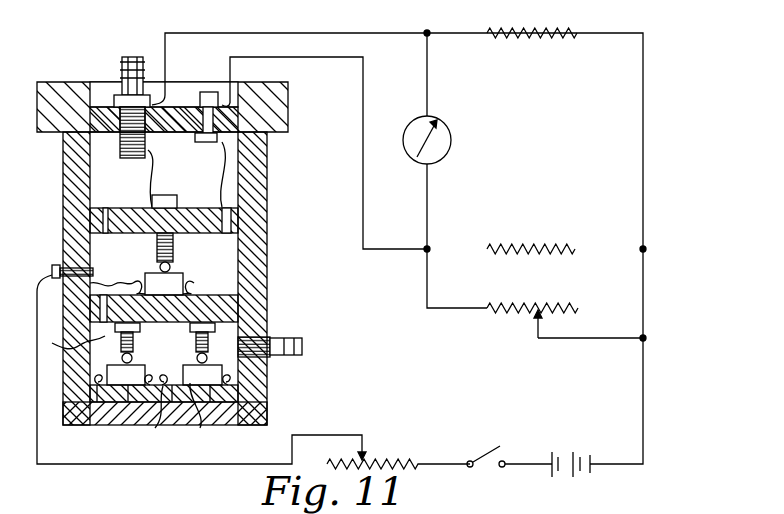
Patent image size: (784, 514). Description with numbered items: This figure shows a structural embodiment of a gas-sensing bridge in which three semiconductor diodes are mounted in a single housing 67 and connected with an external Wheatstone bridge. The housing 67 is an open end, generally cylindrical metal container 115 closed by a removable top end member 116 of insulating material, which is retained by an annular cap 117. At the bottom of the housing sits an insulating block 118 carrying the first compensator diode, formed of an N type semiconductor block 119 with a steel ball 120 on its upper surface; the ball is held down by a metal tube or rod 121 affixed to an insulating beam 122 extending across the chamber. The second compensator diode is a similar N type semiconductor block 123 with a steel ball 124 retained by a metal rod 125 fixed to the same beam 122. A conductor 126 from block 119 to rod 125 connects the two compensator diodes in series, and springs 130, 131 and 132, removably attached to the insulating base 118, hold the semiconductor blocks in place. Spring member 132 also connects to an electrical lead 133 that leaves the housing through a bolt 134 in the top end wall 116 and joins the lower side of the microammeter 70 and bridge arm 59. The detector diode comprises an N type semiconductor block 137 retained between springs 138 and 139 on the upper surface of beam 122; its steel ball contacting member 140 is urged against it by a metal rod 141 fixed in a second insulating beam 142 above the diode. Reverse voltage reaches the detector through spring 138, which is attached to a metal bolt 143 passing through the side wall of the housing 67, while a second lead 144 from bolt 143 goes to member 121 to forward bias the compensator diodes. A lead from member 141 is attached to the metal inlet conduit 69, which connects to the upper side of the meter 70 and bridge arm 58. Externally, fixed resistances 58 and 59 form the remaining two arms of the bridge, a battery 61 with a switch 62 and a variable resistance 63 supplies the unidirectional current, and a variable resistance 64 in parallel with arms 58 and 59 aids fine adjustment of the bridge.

The fixed resistance 58 is at (540, 33).
The fixed resistance 59 is at (522, 247).
The battery 61 is at (560, 480).
The switch 62 is at (492, 450).
The variable resistance 63 is at (400, 460).
The variable resistance 64 is at (528, 308).
The housing 67 is at (270, 170).
The metal inlet conduit 69 is at (122, 158).
The microammeter 70 is at (452, 141).
The metal container 115 is at (268, 226).
The top end member 116 is at (110, 97).
The annular cap 117 is at (289, 99).
The insulating block 118 is at (92, 425).
The N type semiconductor block 119 is at (140, 366).
The steel ball 120 is at (120, 354).
The metal tube or rod 121 is at (140, 340).
The insulating beam 122 is at (240, 303).
The N type semiconductor block 123 is at (225, 372).
The steel ball 124 is at (196, 358).
The metal rod 125 is at (200, 338).
The conductor 126 is at (171, 416).
The spring 130 is at (96, 380).
The spring 131 is at (209, 415).
The spring member 132 is at (230, 372).
The electrical lead 133 is at (222, 152).
The bolt 134 is at (212, 92).
The N type semiconductor block 137 is at (178, 283).
The spring 138 is at (117, 278).
The spring 139 is at (197, 287).
The steel ball contacting member 140 is at (160, 264).
The metal rod 141 is at (174, 248).
The second insulating beam 142 is at (214, 208).
The metal bolt 143 is at (52, 266).
The second lead 144 is at (71, 338).